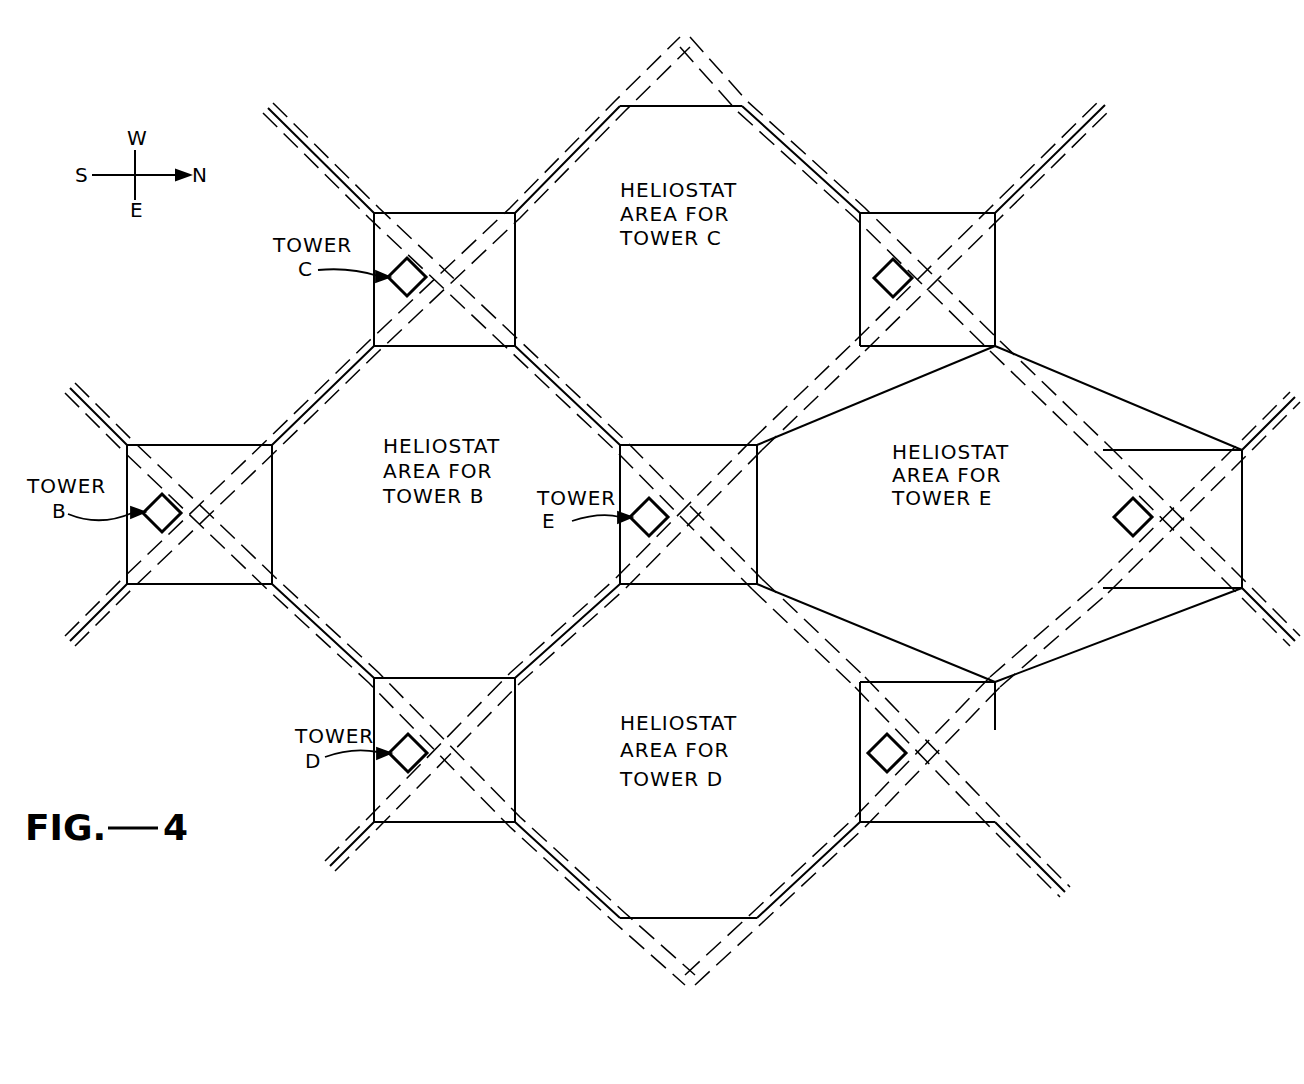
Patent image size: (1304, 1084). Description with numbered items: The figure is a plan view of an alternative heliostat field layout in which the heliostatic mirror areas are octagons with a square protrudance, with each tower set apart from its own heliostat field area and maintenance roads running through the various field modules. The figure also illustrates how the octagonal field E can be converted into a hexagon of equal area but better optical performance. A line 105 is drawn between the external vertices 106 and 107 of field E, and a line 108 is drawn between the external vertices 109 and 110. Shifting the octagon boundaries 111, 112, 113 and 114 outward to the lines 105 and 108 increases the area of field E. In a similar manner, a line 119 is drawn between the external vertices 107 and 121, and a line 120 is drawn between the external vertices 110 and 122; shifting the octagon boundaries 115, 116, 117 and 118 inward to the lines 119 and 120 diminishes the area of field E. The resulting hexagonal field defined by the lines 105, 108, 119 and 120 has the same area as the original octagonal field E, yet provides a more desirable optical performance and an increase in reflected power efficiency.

The line 105 is at (1123, 400).
The external vertex 106 is at (1242, 448).
The external vertex 107 is at (998, 342).
The line 108 is at (1102, 645).
The external vertex 109 is at (1241, 592).
The external vertex 110 is at (998, 687).
The boundary 111 is at (1148, 448).
The boundary 112 is at (1052, 405).
The boundary 113 is at (1145, 587).
The boundary 114 is at (1057, 622).
The boundary 115 is at (905, 346).
The boundary 116 is at (818, 380).
The boundary 117 is at (912, 685).
The boundary 118 is at (820, 652).
The line 119 is at (873, 400).
The line 120 is at (897, 640).
The external vertex 121 is at (762, 452).
The external vertex 122 is at (760, 587).